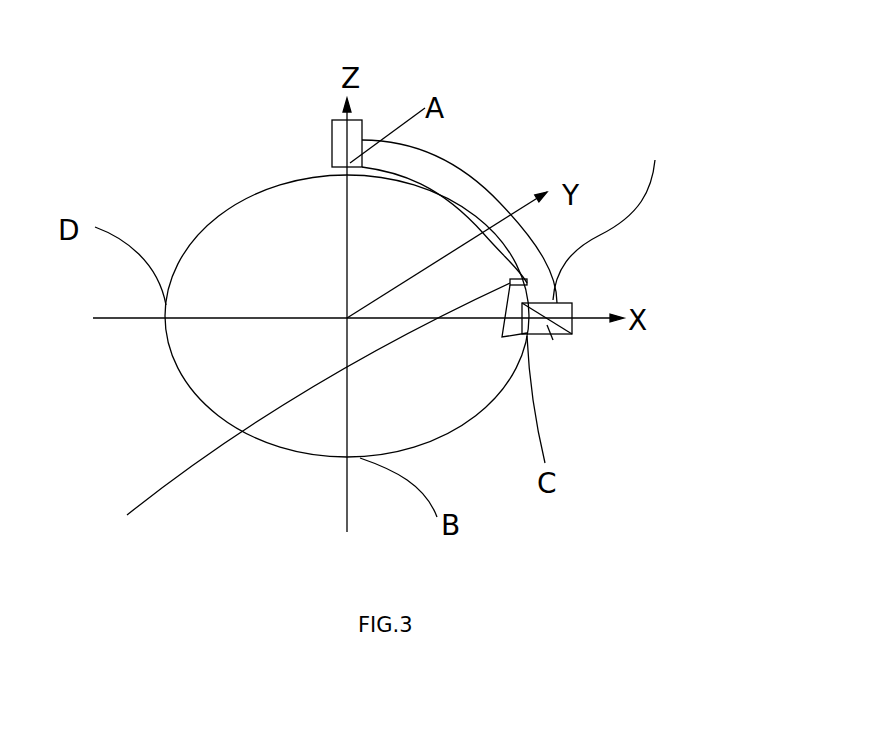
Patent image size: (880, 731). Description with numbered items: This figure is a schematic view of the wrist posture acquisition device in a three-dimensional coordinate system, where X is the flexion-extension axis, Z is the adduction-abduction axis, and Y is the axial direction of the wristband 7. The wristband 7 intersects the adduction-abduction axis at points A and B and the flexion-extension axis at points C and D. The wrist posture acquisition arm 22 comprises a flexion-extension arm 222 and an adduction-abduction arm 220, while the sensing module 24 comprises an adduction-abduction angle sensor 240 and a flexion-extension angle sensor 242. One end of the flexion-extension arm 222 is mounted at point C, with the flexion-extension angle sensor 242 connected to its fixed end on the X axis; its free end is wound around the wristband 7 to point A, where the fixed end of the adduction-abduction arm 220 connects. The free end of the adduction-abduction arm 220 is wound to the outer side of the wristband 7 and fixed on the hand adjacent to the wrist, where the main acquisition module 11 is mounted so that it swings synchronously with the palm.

The wristband 7 is at (193, 390).
The main acquisition module 11 is at (292, 416).
The wrist posture acquisition arm 22 is at (692, 367).
The adduction-abduction arm 220 is at (572, 334).
The flexion-extension arm 222 is at (553, 340).
The sensing module 24 is at (633, 30).
The adduction-abduction angle sensor 240 is at (353, 120).
The flexion-extension angle sensor 242 is at (655, 160).